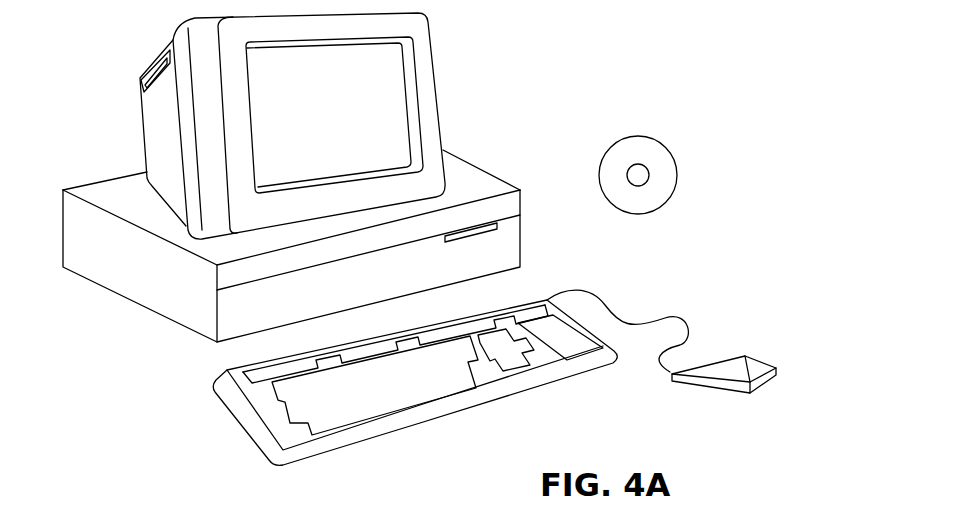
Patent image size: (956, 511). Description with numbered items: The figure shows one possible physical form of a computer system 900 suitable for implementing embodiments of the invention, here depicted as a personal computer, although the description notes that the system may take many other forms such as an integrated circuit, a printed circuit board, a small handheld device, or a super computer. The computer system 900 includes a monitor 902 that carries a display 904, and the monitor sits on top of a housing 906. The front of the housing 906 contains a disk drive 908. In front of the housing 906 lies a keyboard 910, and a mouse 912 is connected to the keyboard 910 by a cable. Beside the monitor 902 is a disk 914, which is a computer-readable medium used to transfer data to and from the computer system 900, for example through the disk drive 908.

The computer system 900 is at (553, 57).
The monitor 902 is at (436, 100).
The display 904 is at (397, 71).
The housing 906 is at (172, 320).
The disk drive 908 is at (497, 222).
The keyboard 910 is at (504, 397).
The mouse 912 is at (753, 362).
The disk 914 is at (655, 137).